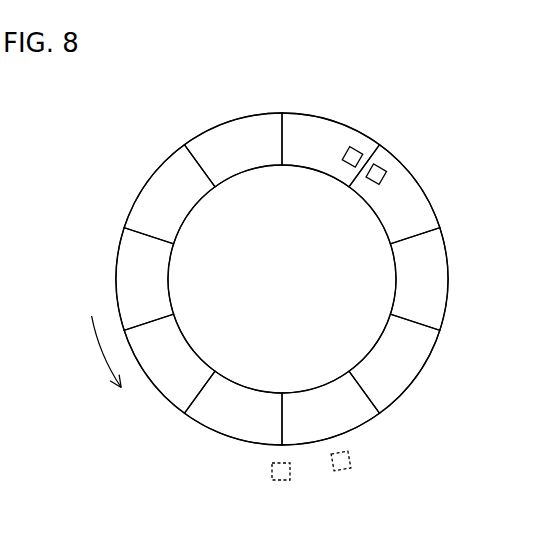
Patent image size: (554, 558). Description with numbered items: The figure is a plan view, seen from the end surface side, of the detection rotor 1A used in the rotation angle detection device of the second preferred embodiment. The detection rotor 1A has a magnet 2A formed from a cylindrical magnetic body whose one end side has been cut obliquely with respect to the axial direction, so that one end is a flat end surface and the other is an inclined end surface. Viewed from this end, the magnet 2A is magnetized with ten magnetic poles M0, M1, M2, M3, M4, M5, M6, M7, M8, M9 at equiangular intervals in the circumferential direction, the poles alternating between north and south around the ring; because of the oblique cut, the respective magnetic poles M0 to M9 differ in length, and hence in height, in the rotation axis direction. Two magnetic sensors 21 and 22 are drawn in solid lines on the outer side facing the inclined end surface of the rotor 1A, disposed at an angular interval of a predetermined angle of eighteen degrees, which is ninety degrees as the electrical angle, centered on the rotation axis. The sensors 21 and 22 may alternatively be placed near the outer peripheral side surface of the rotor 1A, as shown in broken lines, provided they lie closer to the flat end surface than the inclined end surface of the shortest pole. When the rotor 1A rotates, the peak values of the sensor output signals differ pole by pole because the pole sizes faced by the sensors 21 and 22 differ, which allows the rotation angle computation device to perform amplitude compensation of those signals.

The detection rotor 1A is at (218, 112).
The magnet 2A is at (165, 160).
The magnetic pole M0 is at (318, 124).
The magnetic pole M1 is at (422, 210).
The magnetic pole M2 is at (432, 305).
The magnetic pole M3 is at (420, 350).
The magnetic pole M4 is at (355, 418).
The magnetic pole M5 is at (240, 432).
The magnetic pole M6 is at (177, 395).
The magnetic pole M7 is at (128, 262).
The magnetic pole M8 is at (142, 212).
The magnetic pole M9 is at (260, 124).
The magnetic sensor 21 is at (360, 146).
The magnetic sensor 22 is at (385, 167).